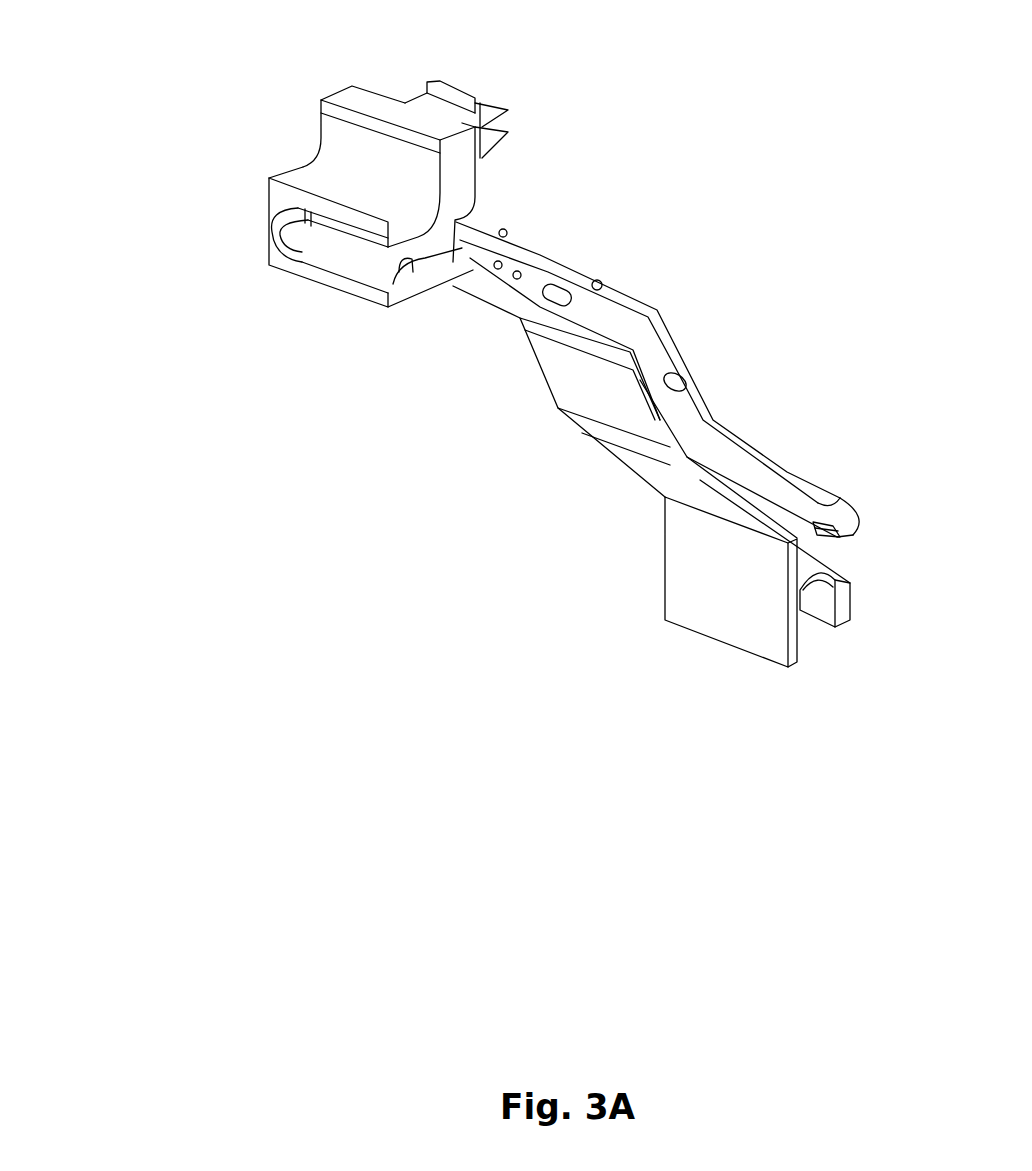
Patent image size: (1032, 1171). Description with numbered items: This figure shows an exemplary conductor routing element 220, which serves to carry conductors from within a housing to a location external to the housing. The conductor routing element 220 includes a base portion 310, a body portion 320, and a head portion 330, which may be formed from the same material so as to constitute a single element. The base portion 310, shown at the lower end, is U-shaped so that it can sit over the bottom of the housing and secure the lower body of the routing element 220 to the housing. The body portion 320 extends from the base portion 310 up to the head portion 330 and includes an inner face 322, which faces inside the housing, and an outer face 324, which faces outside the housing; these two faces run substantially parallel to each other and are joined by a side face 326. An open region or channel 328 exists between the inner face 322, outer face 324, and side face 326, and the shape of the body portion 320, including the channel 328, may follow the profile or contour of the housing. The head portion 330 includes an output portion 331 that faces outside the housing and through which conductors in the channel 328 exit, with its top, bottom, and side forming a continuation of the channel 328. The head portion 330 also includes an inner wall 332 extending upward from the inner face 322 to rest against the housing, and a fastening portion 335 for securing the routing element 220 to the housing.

The conductor routing element 220 is at (627, 91).
The base portion 310 is at (655, 497).
The body portion 320 is at (565, 157).
The inner face 322 is at (692, 347).
The outer face 324 is at (561, 402).
The side face 326 is at (509, 345).
The channel 328 is at (718, 446).
The head portion 330 is at (178, 87).
The output portion 331 is at (243, 208).
The inner wall 332 is at (495, 177).
The fastening portion 335 is at (455, 80).